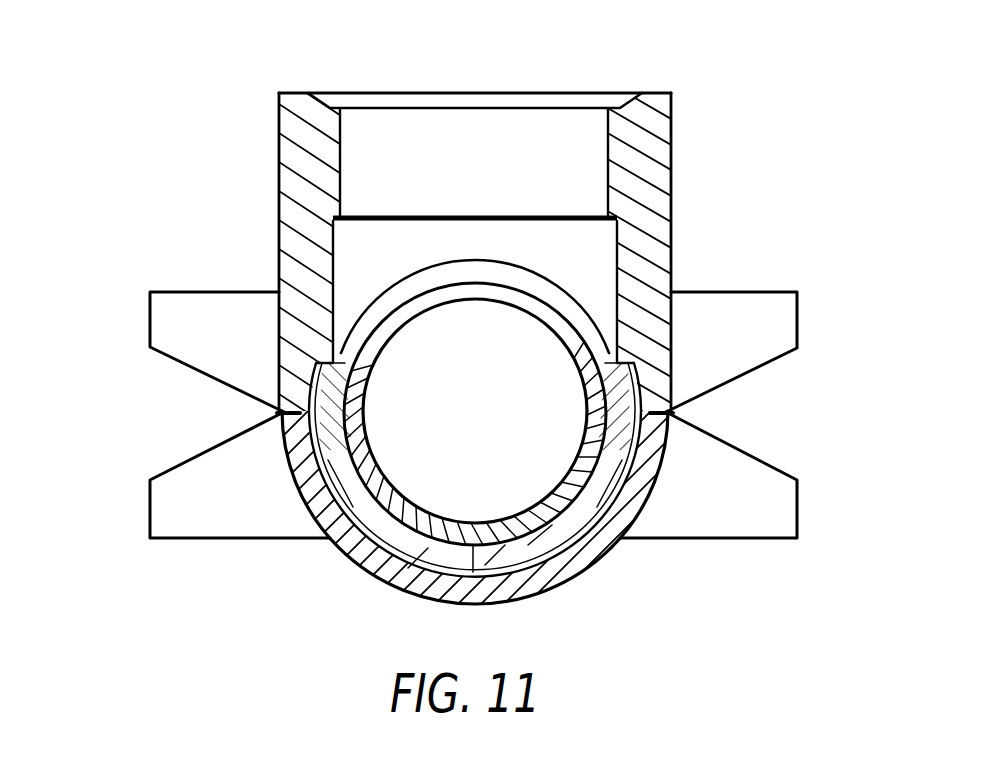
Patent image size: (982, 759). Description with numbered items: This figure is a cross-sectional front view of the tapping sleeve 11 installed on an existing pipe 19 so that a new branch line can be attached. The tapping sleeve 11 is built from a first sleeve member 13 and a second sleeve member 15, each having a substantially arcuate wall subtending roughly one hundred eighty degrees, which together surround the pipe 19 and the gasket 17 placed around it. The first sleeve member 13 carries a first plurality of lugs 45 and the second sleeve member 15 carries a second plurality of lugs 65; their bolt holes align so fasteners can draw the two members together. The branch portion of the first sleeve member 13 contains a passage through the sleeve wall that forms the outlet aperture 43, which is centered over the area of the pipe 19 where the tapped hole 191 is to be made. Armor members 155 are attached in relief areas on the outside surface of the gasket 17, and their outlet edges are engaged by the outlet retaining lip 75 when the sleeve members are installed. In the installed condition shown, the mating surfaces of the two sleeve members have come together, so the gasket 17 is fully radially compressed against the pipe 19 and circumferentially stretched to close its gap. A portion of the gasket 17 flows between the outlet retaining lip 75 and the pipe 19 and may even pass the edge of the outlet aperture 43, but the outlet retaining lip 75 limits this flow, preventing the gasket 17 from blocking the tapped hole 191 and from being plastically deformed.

The tapping sleeve 11 is at (737, 86).
The first sleeve member 13 is at (647, 270).
The second sleeve member 15 is at (590, 553).
The armor member 155 is at (377, 558).
The gasket 17 is at (403, 573).
The pipe 19 is at (387, 485).
The tapped hole 191 is at (376, 345).
The outlet aperture 43 is at (338, 352).
The first plurality of lugs 45 is at (162, 317).
The second plurality of lugs 65 is at (173, 497).
The outlet retaining lip 75 is at (332, 350).